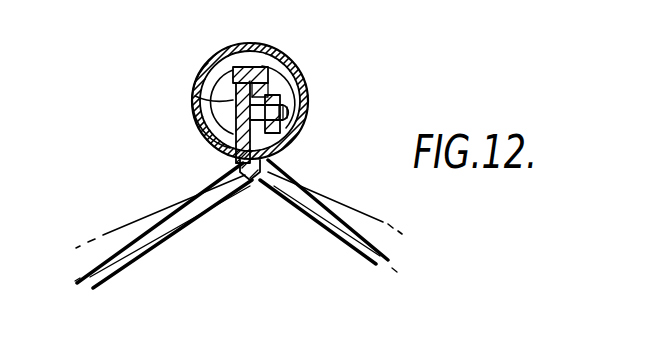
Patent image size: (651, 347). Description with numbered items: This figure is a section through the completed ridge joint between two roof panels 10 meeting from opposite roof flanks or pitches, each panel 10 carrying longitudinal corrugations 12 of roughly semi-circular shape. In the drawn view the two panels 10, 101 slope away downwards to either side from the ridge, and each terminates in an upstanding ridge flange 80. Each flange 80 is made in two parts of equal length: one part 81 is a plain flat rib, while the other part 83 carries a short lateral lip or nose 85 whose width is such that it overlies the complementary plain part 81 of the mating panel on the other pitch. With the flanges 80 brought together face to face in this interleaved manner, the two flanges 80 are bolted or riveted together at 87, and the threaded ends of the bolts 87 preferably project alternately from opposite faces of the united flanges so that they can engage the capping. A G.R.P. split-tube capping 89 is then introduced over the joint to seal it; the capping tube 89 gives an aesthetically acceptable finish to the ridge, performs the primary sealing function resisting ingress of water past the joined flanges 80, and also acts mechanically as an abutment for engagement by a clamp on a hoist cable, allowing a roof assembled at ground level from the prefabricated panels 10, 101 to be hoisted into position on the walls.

The panel 10 is at (160, 232).
The second wing panel 101 is at (307, 212).
The longitudinal corrugation 12 is at (143, 218).
The ridge flange 80 is at (249, 181).
The plain flat rib part 81 is at (296, 104).
The flange part with nose 83 is at (197, 83).
The nose 85 is at (303, 80).
The bolt 87 is at (298, 133).
The split-tube capping 89 is at (193, 118).